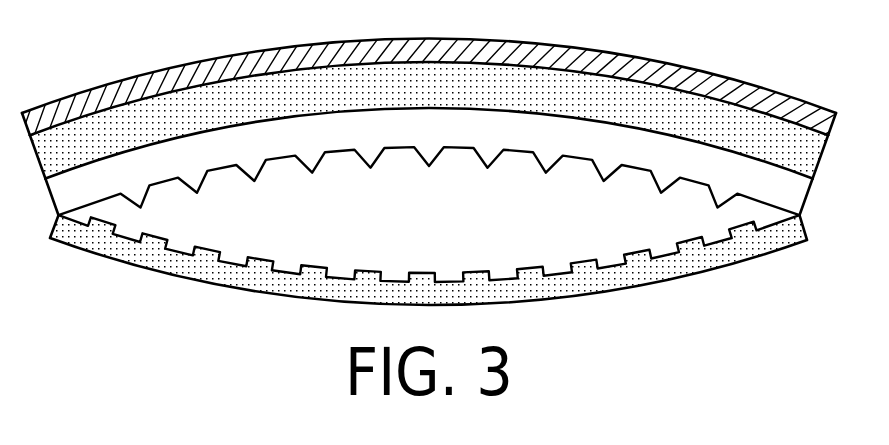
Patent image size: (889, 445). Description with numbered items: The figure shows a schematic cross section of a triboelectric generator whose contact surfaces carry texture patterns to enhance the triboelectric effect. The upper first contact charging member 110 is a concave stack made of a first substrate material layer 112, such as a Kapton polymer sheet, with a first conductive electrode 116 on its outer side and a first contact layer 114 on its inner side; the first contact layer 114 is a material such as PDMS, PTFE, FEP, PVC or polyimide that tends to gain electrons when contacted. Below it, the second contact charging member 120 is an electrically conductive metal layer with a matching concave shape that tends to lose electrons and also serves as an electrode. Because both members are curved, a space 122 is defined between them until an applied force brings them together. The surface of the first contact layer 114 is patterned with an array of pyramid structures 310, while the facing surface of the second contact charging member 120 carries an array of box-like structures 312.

The first contact charging member 110 is at (230, 45).
The first substrate material layer 112 is at (410, 80).
The first contact layer 114 is at (495, 120).
The first conductive electrode 116 is at (325, 43).
The second contact charging member 120 is at (254, 290).
The space 122 is at (391, 224).
The pyramid structures 310 is at (547, 166).
The box-like structures 312 is at (483, 269).